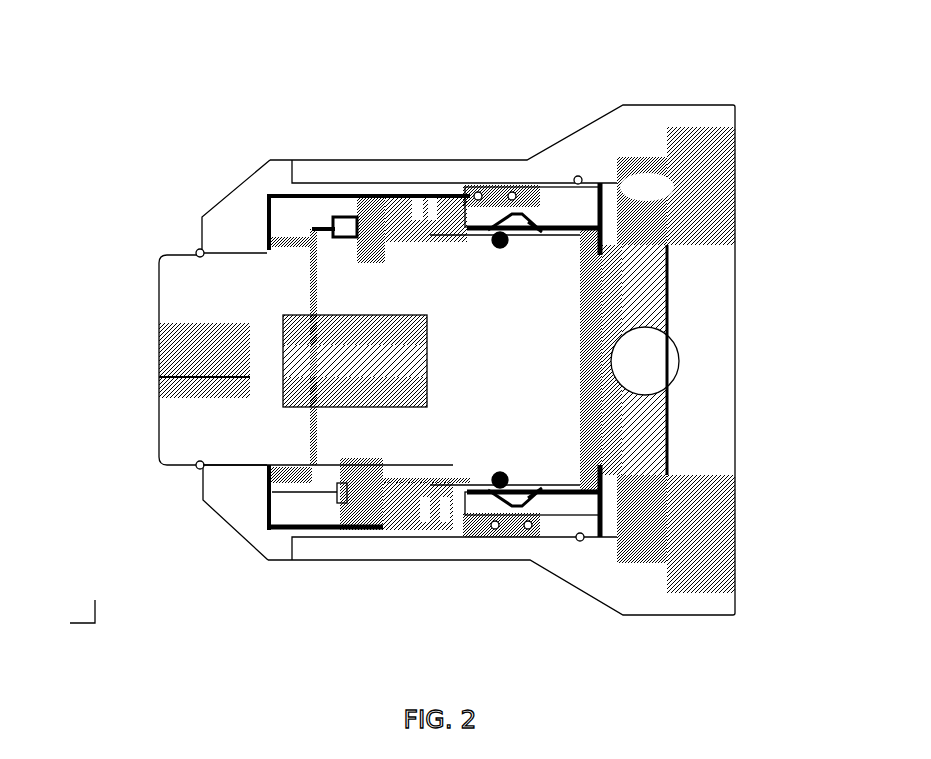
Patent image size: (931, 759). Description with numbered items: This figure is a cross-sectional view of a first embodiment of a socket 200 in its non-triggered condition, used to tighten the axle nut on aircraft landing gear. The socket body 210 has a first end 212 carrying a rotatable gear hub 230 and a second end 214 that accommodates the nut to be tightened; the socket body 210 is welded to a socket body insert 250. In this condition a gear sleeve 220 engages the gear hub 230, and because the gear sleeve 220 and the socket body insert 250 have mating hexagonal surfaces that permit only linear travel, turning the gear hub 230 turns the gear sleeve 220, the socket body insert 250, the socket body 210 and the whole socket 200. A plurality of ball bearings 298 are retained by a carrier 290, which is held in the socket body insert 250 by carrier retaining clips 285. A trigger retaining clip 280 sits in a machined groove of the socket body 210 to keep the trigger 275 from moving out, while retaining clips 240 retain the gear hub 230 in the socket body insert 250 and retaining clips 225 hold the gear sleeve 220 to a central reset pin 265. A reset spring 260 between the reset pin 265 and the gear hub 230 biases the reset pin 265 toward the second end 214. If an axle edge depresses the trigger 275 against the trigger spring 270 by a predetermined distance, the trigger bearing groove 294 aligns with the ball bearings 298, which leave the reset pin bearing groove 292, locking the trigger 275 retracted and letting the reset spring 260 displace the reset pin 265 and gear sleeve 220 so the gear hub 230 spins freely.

The socket 200 is at (762, 113).
The socket body 210 is at (395, 156).
The first end 212 is at (207, 182).
The second end 214 is at (682, 97).
The gear sleeve 220 is at (286, 503).
The retaining clips 225 is at (336, 514).
The gear hub 230 is at (151, 282).
The retaining clips 240 is at (196, 246).
The socket body insert 250 is at (253, 171).
The reset spring 260 is at (379, 404).
The reset pin 265 is at (433, 442).
The trigger spring 270 is at (505, 194).
The trigger 275 is at (554, 201).
The trigger retaining clip 280 is at (579, 179).
The carrier retaining clips 285 is at (419, 529).
The carrier 290 is at (416, 494).
The reset pin bearing groove 292 is at (518, 258).
The trigger bearing groove 294 is at (538, 234).
The ball bearings 298 is at (492, 258).